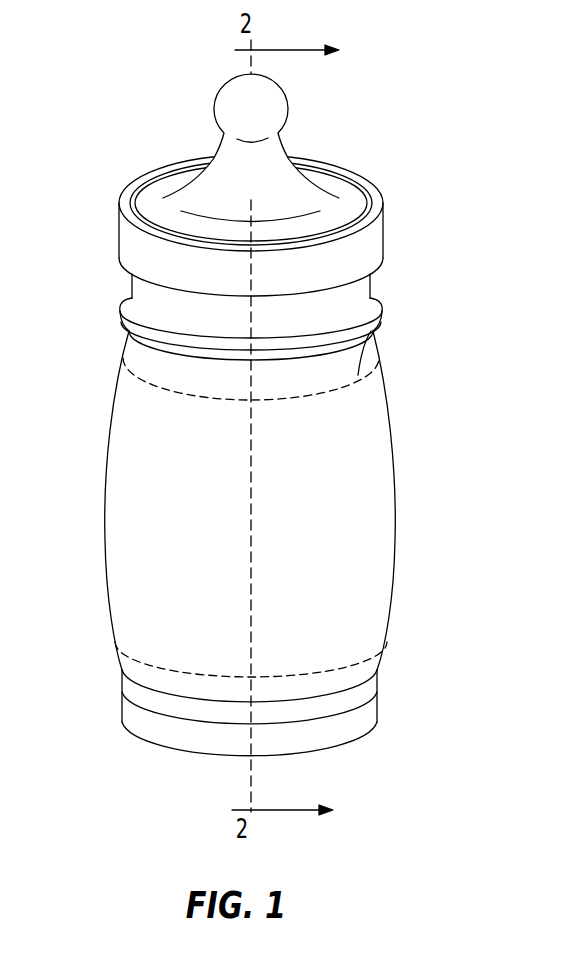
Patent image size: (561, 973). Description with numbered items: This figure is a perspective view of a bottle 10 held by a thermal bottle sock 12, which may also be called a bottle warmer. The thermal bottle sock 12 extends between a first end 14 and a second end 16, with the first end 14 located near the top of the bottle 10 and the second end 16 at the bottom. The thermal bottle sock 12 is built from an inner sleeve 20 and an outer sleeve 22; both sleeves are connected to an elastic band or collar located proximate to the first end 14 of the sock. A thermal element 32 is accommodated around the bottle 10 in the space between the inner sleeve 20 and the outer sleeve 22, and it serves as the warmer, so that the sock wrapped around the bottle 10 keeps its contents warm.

The bottle 10 is at (330, 180).
The thermal bottle sock 12 is at (269, 545).
The first end 14 is at (128, 297).
The second end 16 is at (158, 747).
The inner sleeve 20 is at (358, 720).
The outer sleeve 22 is at (142, 505).
The thermal element 32 is at (373, 337).